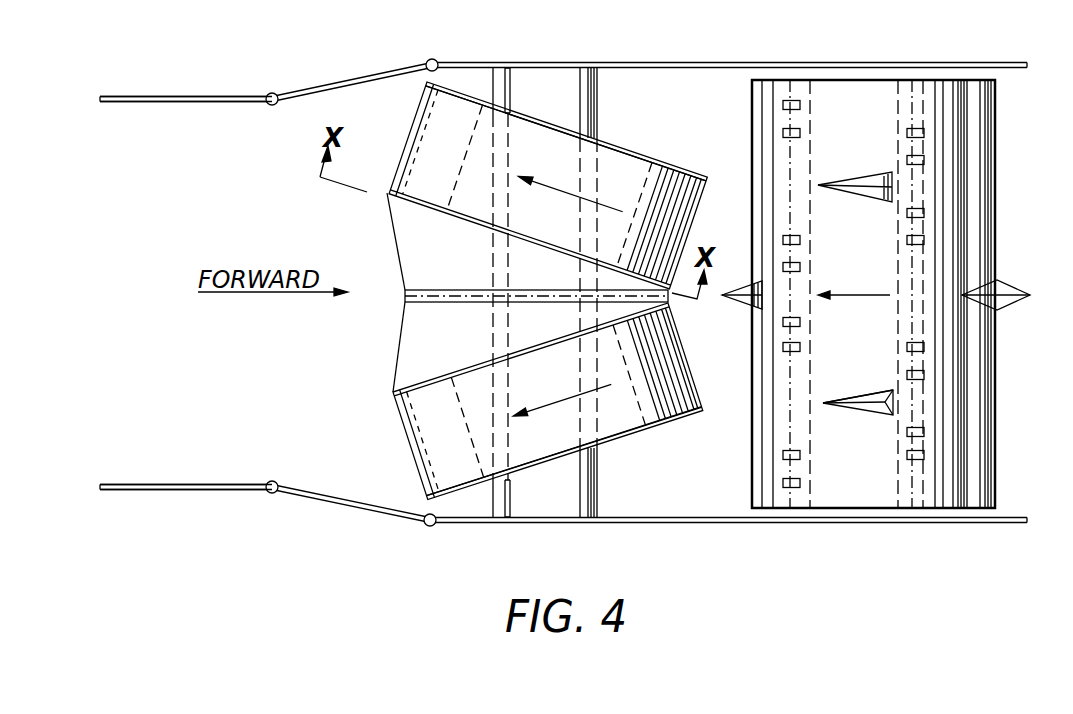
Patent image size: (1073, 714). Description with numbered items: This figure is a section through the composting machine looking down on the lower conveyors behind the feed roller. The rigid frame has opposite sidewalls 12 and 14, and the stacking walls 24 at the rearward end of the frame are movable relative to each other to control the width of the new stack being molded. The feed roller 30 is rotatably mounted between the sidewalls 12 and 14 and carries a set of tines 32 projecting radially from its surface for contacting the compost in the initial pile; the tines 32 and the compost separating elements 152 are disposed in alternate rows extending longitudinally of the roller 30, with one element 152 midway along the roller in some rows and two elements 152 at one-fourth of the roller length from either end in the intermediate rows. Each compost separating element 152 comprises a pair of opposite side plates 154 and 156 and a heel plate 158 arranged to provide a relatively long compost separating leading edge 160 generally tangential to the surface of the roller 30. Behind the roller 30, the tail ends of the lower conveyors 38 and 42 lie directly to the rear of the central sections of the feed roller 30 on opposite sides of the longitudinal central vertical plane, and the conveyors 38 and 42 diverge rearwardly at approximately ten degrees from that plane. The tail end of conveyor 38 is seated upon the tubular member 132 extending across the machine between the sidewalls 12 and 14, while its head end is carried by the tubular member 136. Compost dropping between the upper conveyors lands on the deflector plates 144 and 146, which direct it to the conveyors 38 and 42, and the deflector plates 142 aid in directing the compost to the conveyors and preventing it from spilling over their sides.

The sidewall 12 is at (842, 62).
The sidewall 14 is at (877, 525).
The stacking wall 24 is at (187, 97).
The feed roller 30 is at (874, 235).
The tines 32 is at (915, 128).
The conveyor 38 is at (631, 170).
The conveyor 42 is at (630, 417).
The tubular member 132 is at (598, 500).
The tubular member 136 is at (508, 279).
The deflector plate 142 is at (532, 112).
The deflector plate 144 is at (466, 256).
The deflector plate 146 is at (477, 338).
The compost separating element 152 is at (870, 284).
The side plate 154 is at (875, 408).
The side plate 156 is at (865, 399).
The heel plate 158 is at (890, 402).
The compost separating leading edge 160 is at (860, 404).